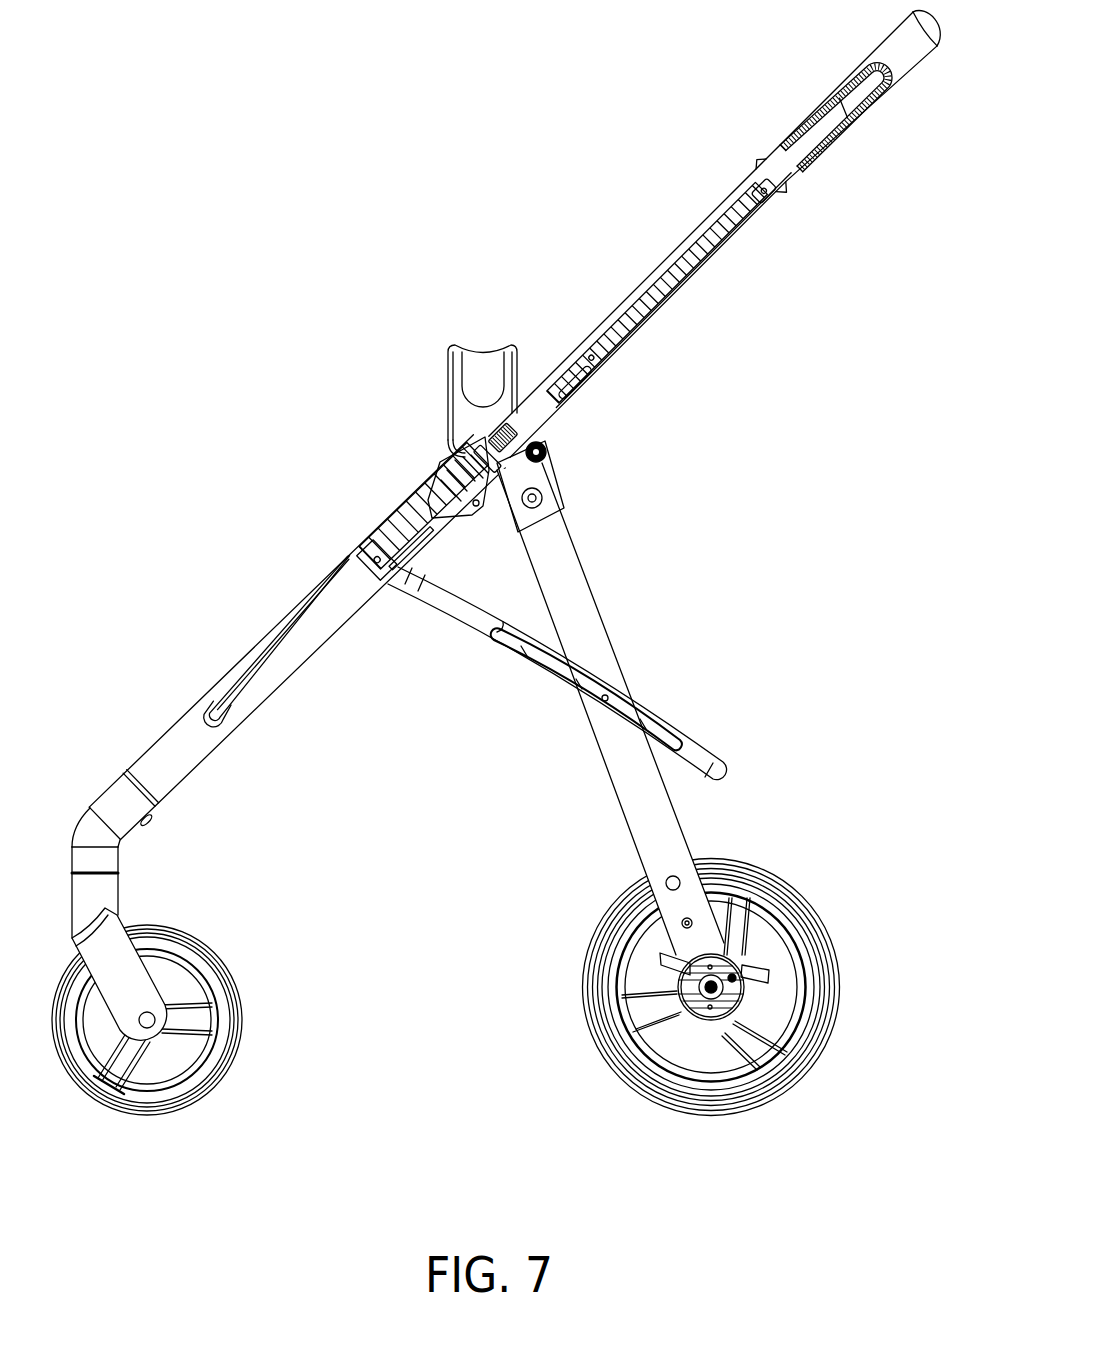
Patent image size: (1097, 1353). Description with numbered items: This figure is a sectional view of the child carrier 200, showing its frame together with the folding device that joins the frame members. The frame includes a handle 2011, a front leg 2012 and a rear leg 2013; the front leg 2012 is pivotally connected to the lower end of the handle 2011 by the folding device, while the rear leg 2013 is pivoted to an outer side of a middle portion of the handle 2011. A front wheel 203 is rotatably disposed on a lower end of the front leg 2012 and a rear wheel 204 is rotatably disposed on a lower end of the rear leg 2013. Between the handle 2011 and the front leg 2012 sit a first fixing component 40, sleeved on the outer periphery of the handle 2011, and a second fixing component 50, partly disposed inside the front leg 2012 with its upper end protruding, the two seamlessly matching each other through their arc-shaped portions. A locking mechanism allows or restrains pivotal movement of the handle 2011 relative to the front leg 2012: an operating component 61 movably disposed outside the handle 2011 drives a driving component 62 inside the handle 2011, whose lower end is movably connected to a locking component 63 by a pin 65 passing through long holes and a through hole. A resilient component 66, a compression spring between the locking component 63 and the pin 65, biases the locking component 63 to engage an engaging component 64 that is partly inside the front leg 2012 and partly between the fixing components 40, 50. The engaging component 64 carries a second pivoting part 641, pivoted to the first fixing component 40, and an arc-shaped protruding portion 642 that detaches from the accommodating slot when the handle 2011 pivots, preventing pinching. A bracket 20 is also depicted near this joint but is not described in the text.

The child carrier 200 is at (275, 57).
The bracket 20 is at (482, 372).
The first fixing component 40 is at (508, 462).
The second fixing component 50 is at (395, 515).
The operating component 61 is at (740, 184).
The driving component 62 is at (670, 273).
The locking component 63 is at (540, 434).
The engaging component 64 is at (362, 568).
The pin 65 is at (510, 432).
The resilient component 66 is at (545, 460).
The second pivoting part 641 is at (495, 500).
The protruding portion 642 is at (457, 482).
The handle 2011 is at (722, 243).
The front leg 2012 is at (165, 758).
The rear leg 2013 is at (655, 812).
The front wheel 203 is at (242, 1017).
The rear wheel 204 is at (760, 1103).